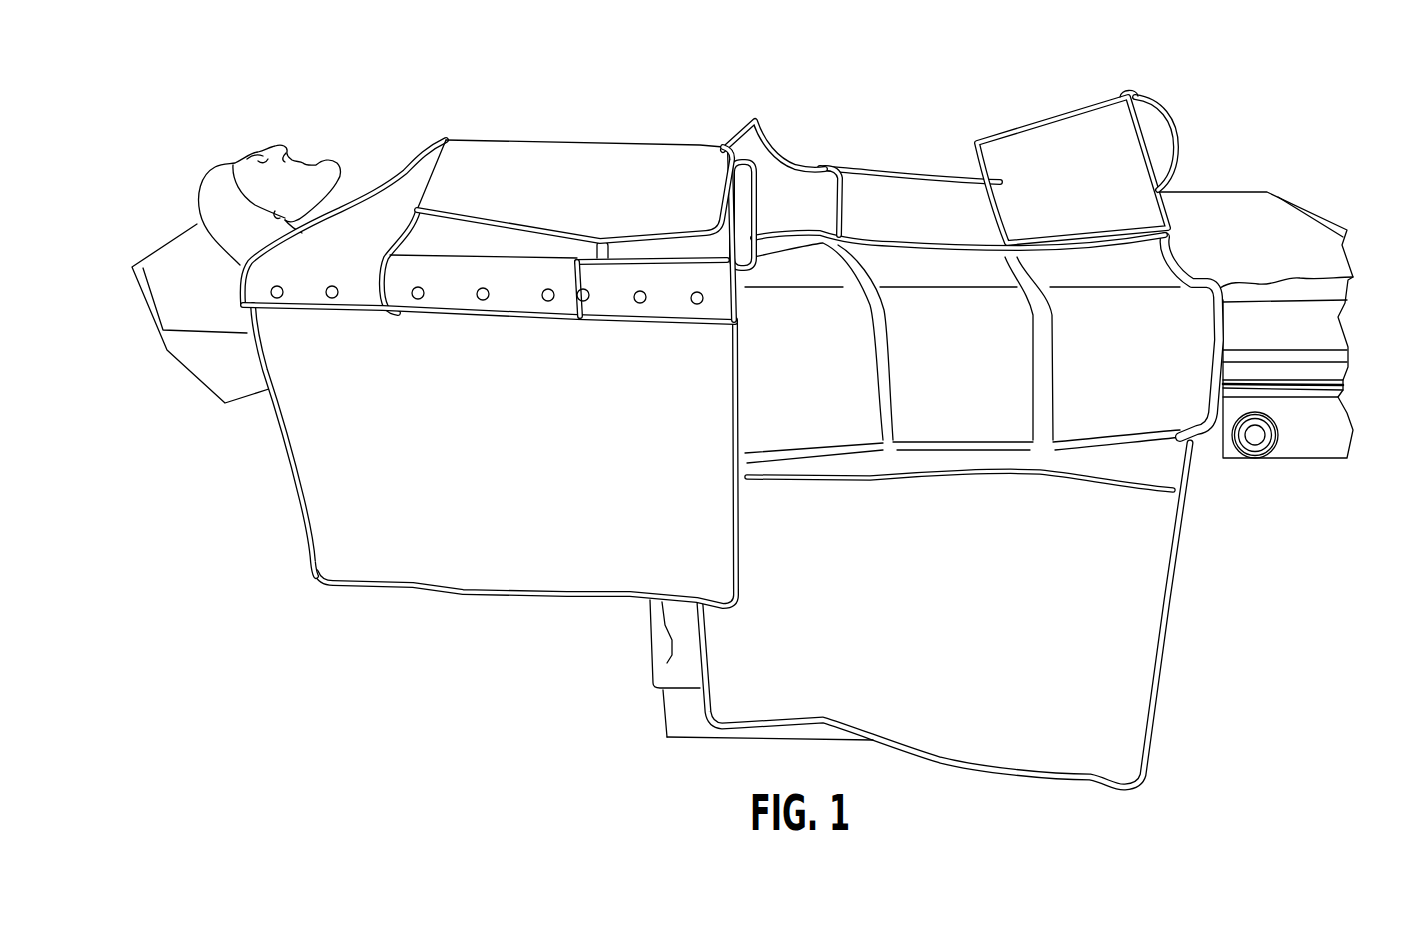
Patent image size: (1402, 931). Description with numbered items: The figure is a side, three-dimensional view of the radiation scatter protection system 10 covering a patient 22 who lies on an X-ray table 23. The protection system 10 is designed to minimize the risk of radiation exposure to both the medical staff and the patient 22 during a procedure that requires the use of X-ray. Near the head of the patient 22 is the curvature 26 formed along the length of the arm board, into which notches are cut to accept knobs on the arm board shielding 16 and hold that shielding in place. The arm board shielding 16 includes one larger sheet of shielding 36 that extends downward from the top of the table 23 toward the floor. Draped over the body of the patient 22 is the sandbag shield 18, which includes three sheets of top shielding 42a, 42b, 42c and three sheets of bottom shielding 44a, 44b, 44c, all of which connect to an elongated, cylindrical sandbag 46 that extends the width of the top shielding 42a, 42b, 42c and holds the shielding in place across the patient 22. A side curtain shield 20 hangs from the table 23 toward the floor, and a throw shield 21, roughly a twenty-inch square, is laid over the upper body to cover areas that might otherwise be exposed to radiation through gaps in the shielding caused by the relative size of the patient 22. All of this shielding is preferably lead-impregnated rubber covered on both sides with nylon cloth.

The protection system 10 is at (186, 108).
The arm board shielding 16 is at (288, 447).
The sandbag shield 18 is at (891, 203).
The side curtain shield 20 is at (1117, 670).
The throw shield 21 is at (618, 163).
The patient 22 is at (318, 173).
The table 23 is at (1317, 435).
The curvature 26 is at (217, 307).
The larger sheet of shielding 36 is at (463, 570).
The top shielding sheet 42a is at (793, 203).
The top shielding sheet 42b is at (940, 207).
The top shielding sheet 42c is at (1047, 163).
The bottom shielding sheet 44a is at (810, 420).
The bottom shielding sheet 44b is at (950, 420).
The bottom shielding sheet 44c is at (1160, 413).
The sandbag 46 is at (1133, 237).